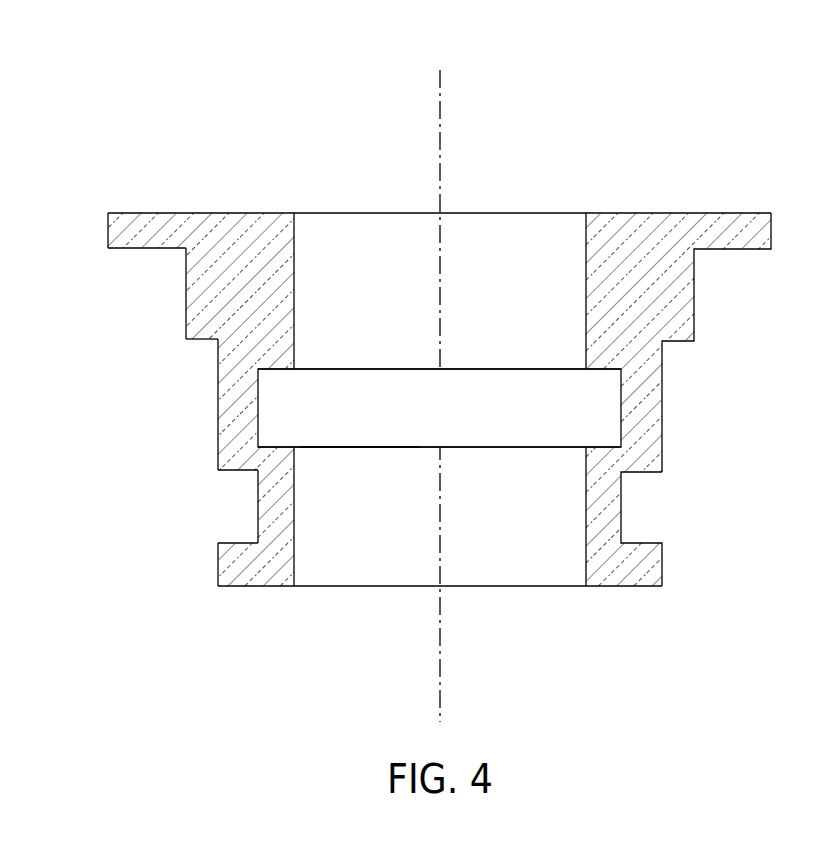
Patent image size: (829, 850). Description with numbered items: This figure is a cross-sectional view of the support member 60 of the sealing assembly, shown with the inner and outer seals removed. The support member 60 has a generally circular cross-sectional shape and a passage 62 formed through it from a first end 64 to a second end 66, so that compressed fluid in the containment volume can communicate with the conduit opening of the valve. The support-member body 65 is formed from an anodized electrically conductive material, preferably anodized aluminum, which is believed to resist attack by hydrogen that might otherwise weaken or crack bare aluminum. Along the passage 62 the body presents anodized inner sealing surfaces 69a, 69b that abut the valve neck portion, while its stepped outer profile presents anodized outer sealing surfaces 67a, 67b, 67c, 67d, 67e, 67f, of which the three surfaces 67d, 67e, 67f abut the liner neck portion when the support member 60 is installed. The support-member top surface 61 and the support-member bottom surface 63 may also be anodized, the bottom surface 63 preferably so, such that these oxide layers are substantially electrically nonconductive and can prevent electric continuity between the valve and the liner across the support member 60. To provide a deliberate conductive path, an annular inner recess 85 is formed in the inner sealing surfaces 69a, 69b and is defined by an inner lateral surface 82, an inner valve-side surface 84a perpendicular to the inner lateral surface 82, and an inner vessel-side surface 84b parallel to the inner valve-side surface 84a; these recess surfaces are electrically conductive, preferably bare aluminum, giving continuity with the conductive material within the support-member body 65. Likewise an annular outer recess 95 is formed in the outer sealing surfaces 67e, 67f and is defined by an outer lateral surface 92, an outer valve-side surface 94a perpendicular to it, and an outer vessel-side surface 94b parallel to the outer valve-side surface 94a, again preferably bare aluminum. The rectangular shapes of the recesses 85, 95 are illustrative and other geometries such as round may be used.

The support member 60 is at (700, 75).
The support-member top surface 61 is at (205, 212).
The passage 62 is at (395, 212).
The support-member bottom surface 63 is at (254, 588).
The first end 64 is at (467, 212).
The support-member body 65 is at (678, 296).
The second end 66 is at (380, 588).
The anodized outer sealing surface 67a is at (108, 232).
The anodized outer sealing surface 67b is at (140, 248).
The anodized outer sealing surface 67c is at (186, 322).
The anodized outer sealing surface 67d is at (205, 339).
The anodized outer sealing surface 67e is at (218, 416).
The anodized outer sealing surface 67f is at (218, 568).
The anodized inner sealing surface 69a is at (294, 263).
The anodized inner sealing surface 69b is at (294, 551).
The inner lateral surface 82 is at (620, 416).
The inner valve-side surface 84a is at (607, 370).
The inner vessel-side surface 84b is at (607, 447).
The annular inner recess 85 is at (350, 433).
The outer lateral surface 92 is at (258, 497).
The outer valve-side surface 94a is at (236, 471).
The outer vessel-side surface 94b is at (240, 543).
The annular outer recess 95 is at (665, 510).